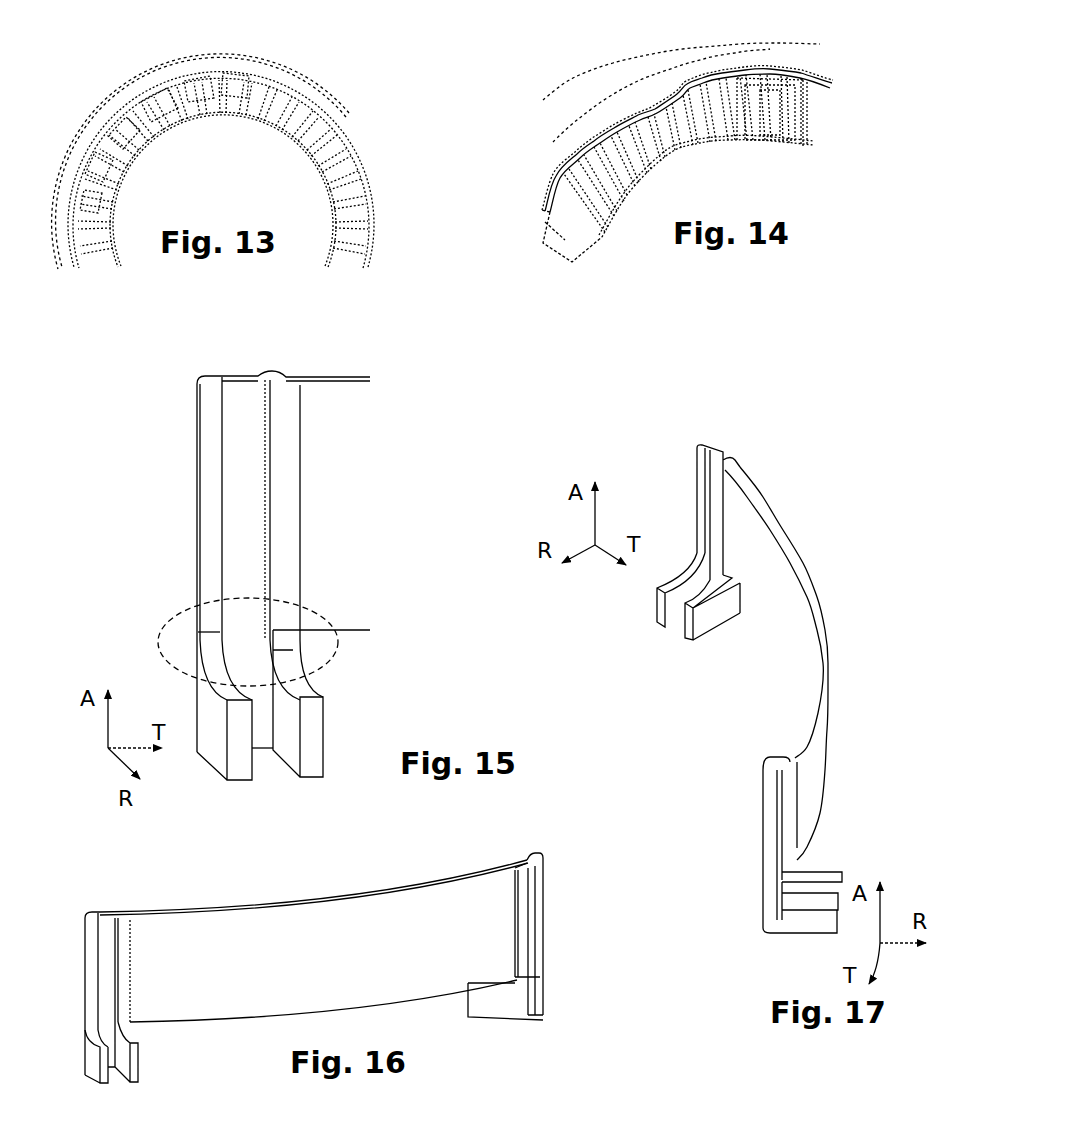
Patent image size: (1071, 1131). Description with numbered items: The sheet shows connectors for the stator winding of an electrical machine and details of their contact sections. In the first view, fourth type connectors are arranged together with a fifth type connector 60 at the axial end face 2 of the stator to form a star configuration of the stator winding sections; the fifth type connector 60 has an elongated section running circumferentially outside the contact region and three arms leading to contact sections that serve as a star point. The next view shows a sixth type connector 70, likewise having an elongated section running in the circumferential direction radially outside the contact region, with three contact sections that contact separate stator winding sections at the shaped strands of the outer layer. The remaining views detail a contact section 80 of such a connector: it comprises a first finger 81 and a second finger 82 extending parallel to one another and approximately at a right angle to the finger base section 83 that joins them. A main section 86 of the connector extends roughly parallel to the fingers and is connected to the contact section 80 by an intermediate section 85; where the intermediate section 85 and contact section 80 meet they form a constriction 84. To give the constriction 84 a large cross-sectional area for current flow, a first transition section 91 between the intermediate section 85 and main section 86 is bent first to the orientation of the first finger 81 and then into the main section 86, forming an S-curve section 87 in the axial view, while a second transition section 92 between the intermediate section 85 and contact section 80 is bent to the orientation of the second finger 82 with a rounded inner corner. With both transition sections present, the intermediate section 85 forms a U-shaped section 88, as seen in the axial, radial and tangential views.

In FIG. 13, the axial end face 2 is at (357, 113).
In FIG. 14, the axial end face 2 is at (598, 130).
In FIG. 13, the fifth type connector 60 is at (102, 113).
In FIG. 14, the sixth type connector 70 is at (572, 183).
In FIG. 15, the contact section 80 is at (244, 575).
In FIG. 16, the contact section 80 is at (329, 960).
In FIG. 17, the contact section 80 is at (707, 689).
In FIG. 15, the first finger 81 is at (317, 773).
In FIG. 16, the first finger 81 is at (160, 1062).
In FIG. 17, the first finger 81 is at (761, 754).
In FIG. 15, the second finger 82 is at (237, 770).
In FIG. 16, the second finger 82 is at (96, 1056).
In FIG. 17, the second finger 82 is at (749, 723).
In FIG. 15, the finger base section 83 is at (258, 733).
In FIG. 15, the constriction 84 is at (158, 645).
In FIG. 15, the intermediate section 85 is at (238, 527).
In FIG. 16, the intermediate section 85 is at (98, 964).
In FIG. 17, the intermediate section 85 is at (708, 489).
In FIG. 15, the main section 86 is at (349, 525).
In FIG. 16, the main section 86 is at (392, 902).
In FIG. 17, the main section 86 is at (793, 661).
In FIG. 15, the S-curve section 87 is at (277, 364).
In FIG. 15, the U-shaped section 88 is at (232, 364).
In FIG. 15, the first transition section 91 is at (293, 610).
In FIG. 15, the second transition section 92 is at (197, 668).